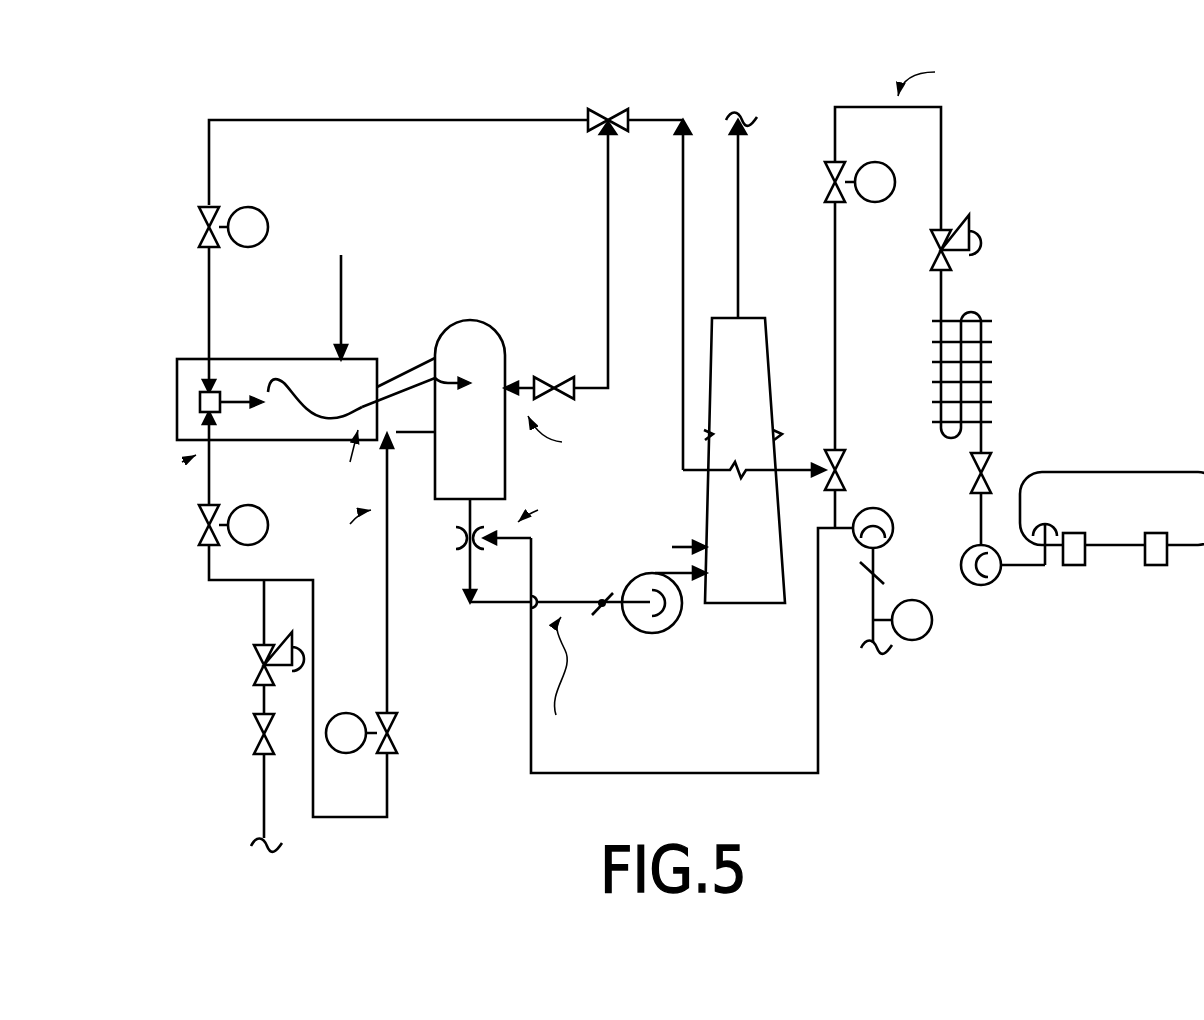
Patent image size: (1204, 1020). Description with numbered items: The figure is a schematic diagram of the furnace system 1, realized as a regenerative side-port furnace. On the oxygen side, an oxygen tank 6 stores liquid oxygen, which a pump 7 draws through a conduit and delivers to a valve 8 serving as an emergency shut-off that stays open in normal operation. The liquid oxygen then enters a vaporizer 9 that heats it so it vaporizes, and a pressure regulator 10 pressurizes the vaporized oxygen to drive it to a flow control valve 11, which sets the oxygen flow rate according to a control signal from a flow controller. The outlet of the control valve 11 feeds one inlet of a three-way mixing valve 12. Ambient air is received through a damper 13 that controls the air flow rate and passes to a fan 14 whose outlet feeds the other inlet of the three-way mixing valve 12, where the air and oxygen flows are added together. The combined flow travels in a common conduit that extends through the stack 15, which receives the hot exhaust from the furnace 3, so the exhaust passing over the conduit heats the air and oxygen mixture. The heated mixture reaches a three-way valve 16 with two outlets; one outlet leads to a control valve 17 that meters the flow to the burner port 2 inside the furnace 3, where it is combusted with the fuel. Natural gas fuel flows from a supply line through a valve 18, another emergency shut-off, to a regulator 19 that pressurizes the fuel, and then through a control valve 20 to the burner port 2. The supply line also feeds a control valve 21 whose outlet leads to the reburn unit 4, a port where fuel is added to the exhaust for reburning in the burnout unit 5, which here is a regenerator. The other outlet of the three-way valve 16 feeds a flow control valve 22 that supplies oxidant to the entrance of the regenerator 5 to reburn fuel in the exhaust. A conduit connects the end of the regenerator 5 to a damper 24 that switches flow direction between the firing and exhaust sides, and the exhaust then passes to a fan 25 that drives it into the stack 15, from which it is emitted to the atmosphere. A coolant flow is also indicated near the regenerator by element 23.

The furnace system 1 is at (313, 68).
The burner port 2 is at (184, 378).
The furnace 3 is at (238, 338).
The reburn unit 4 is at (404, 350).
The burnout unit 5 is at (481, 305).
The oxygen tank 6 is at (1112, 458).
The pump 7 is at (969, 607).
The valve 8 is at (1006, 459).
The vaporizer 9 is at (1009, 380).
The pressure regulator 10 is at (988, 217).
The flow control valve 11 is at (813, 178).
The three-way mixing valve 12 is at (856, 459).
The damper 13 is at (858, 594).
The fan 14 is at (902, 504).
The stack 15 is at (698, 398).
The three-way valve 16 is at (610, 96).
The control valve 17 is at (188, 230).
The valve 18 is at (243, 735).
The regulator 19 is at (243, 668).
The control valve 20 is at (190, 526).
The control valve 21 is at (406, 735).
The flow control valve 22 is at (555, 362).
The coolant heat exchanger 23 is at (437, 546).
The damper 24 is at (606, 632).
The fan 25 is at (694, 636).